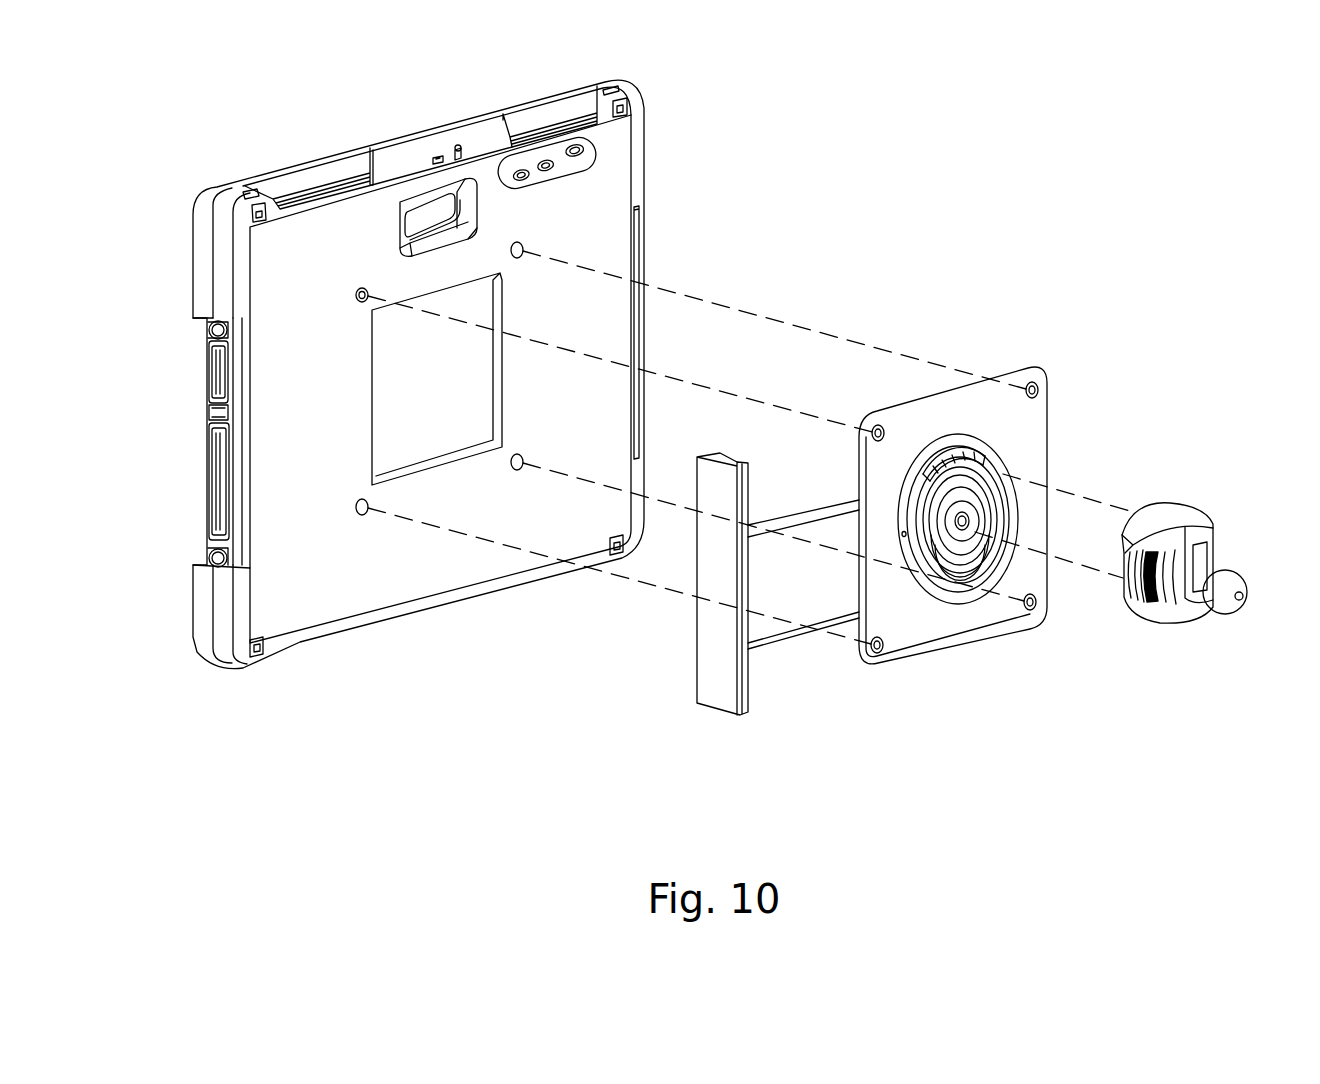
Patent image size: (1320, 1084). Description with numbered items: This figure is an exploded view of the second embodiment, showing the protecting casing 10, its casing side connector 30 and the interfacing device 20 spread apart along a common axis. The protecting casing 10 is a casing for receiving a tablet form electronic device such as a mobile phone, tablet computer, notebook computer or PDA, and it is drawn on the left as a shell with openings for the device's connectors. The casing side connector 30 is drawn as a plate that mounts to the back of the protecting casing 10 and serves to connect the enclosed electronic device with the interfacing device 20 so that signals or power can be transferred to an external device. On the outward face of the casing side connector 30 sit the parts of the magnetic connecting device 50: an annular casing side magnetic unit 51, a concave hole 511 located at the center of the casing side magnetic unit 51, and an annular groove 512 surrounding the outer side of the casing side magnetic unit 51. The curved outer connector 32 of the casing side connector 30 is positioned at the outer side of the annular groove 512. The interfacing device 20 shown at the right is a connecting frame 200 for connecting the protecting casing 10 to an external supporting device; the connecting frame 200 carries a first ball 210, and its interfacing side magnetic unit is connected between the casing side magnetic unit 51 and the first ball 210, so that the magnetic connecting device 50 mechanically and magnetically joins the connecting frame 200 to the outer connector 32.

The protecting casing 10 is at (195, 252).
The interfacing device 20 is at (1213, 554).
The casing side connector 30 is at (886, 396).
The outer connector 32 is at (980, 453).
The magnetic connecting device 50 is at (962, 545).
The casing side magnetic unit 51 is at (975, 520).
The concave hole 511 is at (965, 519).
The annular groove 512 is at (943, 557).
The connecting frame 200 is at (1213, 547).
The first ball 210 is at (1231, 615).